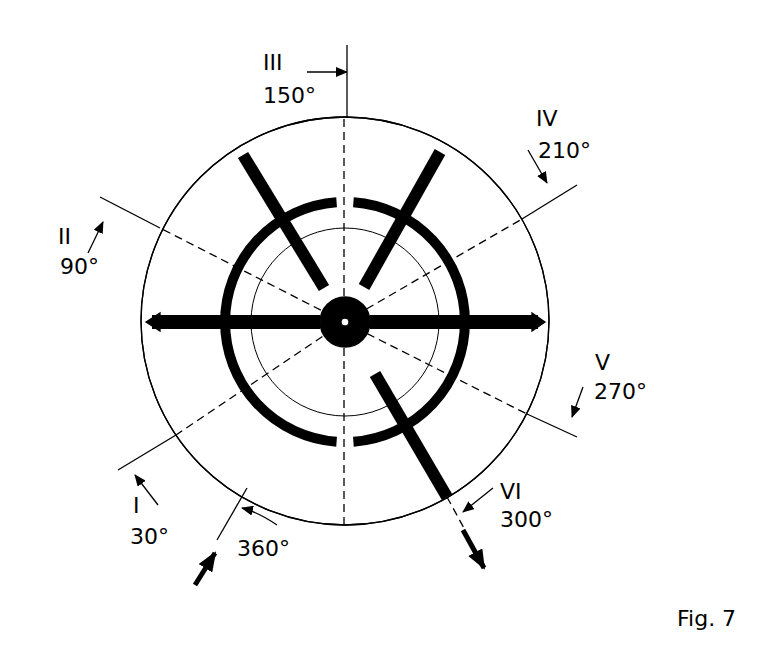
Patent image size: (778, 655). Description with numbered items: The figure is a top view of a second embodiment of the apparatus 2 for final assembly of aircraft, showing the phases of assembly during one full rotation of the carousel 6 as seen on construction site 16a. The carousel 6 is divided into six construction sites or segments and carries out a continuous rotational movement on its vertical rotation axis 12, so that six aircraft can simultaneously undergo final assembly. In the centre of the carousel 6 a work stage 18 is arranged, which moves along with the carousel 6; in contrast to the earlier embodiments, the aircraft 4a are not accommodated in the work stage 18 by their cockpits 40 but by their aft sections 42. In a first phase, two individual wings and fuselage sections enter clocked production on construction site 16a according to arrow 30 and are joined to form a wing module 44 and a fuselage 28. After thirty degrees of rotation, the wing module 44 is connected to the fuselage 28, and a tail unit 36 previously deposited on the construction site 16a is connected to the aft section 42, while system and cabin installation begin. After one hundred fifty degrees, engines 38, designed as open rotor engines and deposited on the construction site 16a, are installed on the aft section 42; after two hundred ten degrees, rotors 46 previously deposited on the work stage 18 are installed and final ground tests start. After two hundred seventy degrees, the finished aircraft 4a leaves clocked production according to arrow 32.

The apparatus 2 is at (35, 32).
The carousel 6 is at (202, 162).
The vertical rotation axis 12 is at (343, 320).
The work stage 18 is at (262, 247).
The engines 38 is at (387, 268).
The fuselage 28 is at (200, 325).
The cockpits 40 is at (158, 328).
The aft sections 42 is at (273, 325).
The tail unit 36 is at (292, 343).
The rotors 46 is at (407, 305).
The aircraft 4a is at (443, 438).
The wing module 44 is at (298, 440).
The construction site 16a is at (323, 487).
The arrow 30 is at (207, 573).
The arrow 32 is at (465, 545).